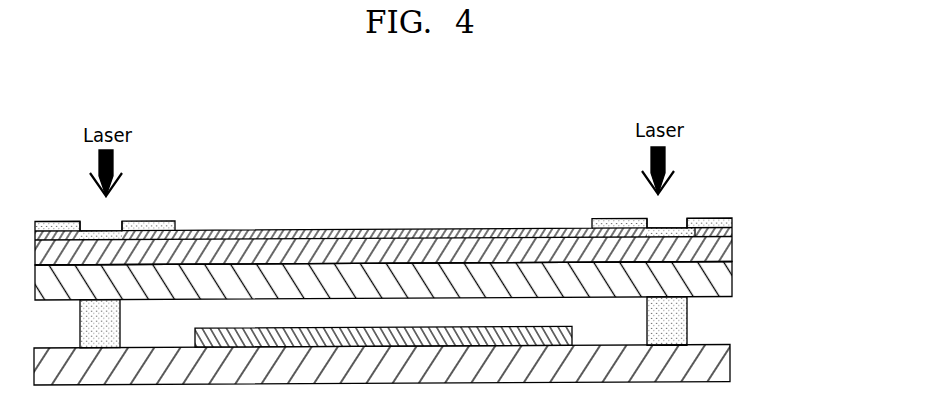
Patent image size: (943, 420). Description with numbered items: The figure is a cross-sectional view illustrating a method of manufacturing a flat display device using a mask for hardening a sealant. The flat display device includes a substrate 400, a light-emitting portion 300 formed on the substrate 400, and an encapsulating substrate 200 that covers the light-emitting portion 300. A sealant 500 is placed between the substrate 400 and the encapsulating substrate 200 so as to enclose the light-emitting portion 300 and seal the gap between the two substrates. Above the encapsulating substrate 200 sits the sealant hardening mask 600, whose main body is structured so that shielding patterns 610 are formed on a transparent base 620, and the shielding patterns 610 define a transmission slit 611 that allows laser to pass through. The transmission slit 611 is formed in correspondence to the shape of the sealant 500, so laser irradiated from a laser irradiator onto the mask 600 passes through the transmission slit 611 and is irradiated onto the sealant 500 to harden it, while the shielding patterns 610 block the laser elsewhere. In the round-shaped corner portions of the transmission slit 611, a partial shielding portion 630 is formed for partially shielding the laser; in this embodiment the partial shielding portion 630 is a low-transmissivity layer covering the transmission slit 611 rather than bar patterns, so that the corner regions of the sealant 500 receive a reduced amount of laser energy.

The encapsulating substrate 200 is at (732, 280).
The light-emitting portion 300 is at (365, 328).
The substrate 400 is at (730, 362).
The sealant 500 is at (122, 326).
The sealant hardening mask 600 is at (802, 223).
The shielding patterns 610 is at (732, 235).
The transmission slit 611 is at (111, 223).
The transparent base 620 is at (732, 250).
The partial shielding portion 630 is at (708, 217).